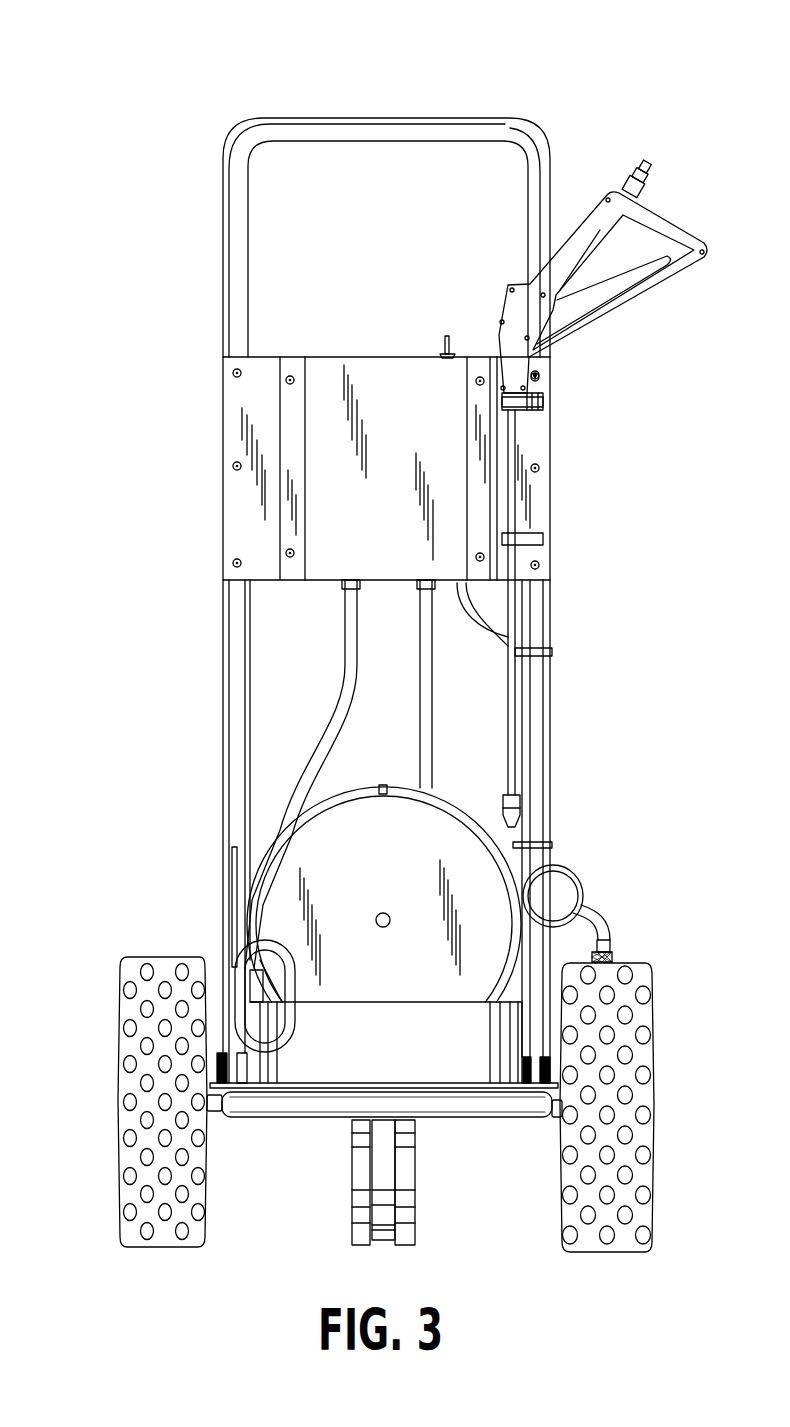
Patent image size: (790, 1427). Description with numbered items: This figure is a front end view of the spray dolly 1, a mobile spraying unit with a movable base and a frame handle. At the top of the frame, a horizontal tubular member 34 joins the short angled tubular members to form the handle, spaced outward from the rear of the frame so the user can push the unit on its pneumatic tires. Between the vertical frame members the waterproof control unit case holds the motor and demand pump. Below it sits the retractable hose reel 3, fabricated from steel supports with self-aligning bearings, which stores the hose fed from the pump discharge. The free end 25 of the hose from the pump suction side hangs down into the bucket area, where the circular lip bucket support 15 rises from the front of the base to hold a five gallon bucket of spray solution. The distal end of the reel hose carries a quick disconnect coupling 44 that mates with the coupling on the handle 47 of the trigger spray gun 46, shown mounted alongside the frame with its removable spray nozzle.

The spray dolly 1 is at (137, 228).
The horizontal tubular member 34 is at (362, 127).
The handle 47 is at (585, 235).
The trigger spray gun 46 is at (518, 432).
The hose reel 3 is at (357, 792).
The free end of the hose 25 is at (250, 972).
The quick disconnect coupling 44 is at (613, 958).
The bucket support 15 is at (409, 1055).